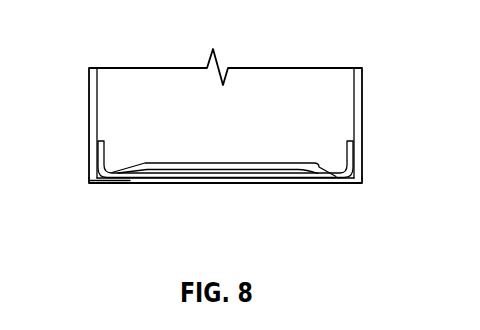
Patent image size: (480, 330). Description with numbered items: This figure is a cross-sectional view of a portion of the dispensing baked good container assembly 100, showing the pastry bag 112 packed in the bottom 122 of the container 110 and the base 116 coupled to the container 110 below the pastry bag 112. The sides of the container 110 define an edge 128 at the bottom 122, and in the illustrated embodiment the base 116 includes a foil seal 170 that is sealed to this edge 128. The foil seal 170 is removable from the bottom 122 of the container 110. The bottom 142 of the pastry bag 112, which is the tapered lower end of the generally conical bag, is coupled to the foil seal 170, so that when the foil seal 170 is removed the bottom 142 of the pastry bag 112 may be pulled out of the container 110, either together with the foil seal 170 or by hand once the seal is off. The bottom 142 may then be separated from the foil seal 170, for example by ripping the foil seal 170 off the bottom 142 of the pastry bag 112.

The container assembly 100 is at (395, 52).
The container 110 is at (357, 100).
The pastry bag 112 is at (217, 167).
The base 116 is at (132, 181).
The bottom 122 is at (90, 181).
The edge 128 is at (92, 183).
The bottom of the pastry bag 142 is at (180, 181).
The foil seal 170 is at (222, 181).